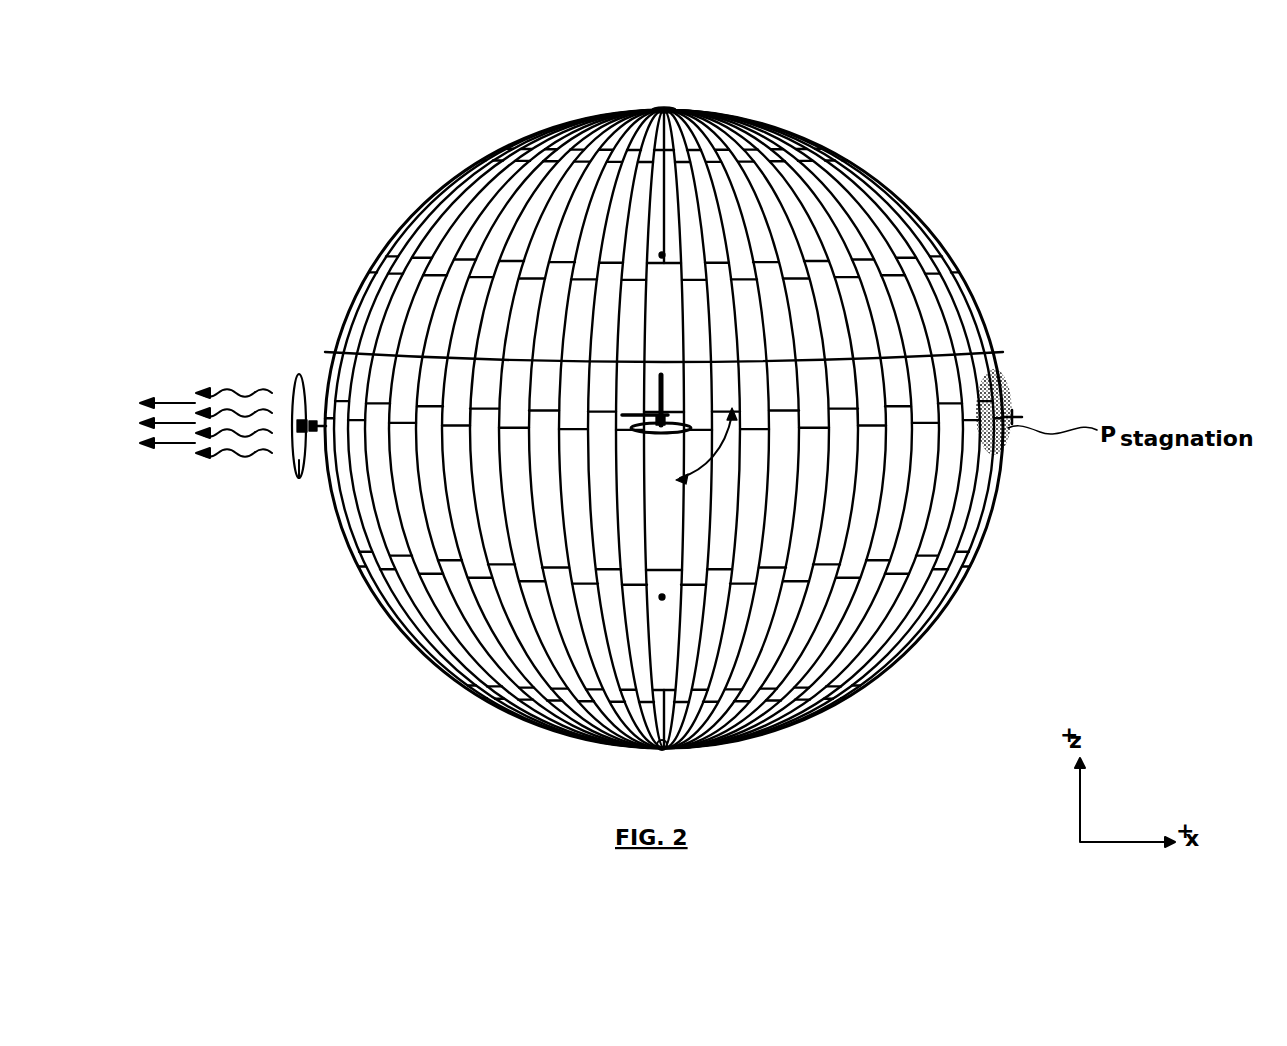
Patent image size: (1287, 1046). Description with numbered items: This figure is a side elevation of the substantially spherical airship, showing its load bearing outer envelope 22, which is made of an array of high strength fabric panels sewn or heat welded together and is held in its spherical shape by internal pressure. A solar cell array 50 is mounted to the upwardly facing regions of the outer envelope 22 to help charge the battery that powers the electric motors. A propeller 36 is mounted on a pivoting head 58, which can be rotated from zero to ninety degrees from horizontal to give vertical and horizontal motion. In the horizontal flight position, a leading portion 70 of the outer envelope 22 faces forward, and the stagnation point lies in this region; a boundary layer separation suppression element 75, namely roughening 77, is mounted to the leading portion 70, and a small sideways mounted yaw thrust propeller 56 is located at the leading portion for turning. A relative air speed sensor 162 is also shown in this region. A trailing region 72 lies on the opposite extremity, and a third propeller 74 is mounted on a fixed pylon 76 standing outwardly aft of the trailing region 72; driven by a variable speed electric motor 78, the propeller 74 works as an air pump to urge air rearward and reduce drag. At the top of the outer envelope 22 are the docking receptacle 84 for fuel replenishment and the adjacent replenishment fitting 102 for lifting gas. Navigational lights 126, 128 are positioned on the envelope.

The load bearing outer envelope 22 is at (408, 638).
The propeller 36 is at (648, 440).
The solar cell array 50 is at (905, 207).
The yaw thrust propeller 56 is at (1020, 417).
The pivoting head 58 is at (635, 413).
The leading portion of outer envelope 70 is at (1012, 400).
The trailing region 72 is at (317, 437).
The third propeller 74 is at (297, 482).
The boundary layer separation suppression element 75 is at (990, 340).
The fixed pylon 76 is at (317, 412).
The roughening 77 is at (1005, 370).
The variable speed electric motor 78 is at (290, 396).
The docking receptacle 84 is at (643, 107).
The replenishment fitting 102 is at (672, 108).
The navigational light 126 is at (662, 255).
The navigational light 128 is at (385, 240).
The relative air speed sensor 162 is at (1010, 447).